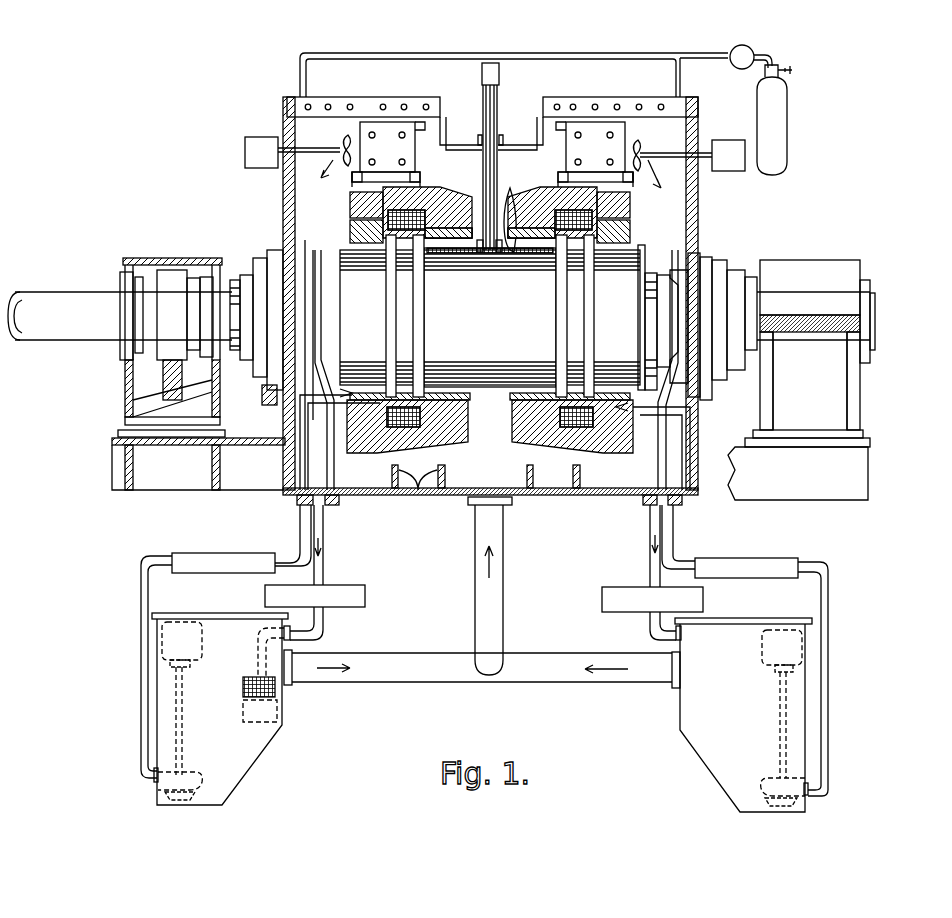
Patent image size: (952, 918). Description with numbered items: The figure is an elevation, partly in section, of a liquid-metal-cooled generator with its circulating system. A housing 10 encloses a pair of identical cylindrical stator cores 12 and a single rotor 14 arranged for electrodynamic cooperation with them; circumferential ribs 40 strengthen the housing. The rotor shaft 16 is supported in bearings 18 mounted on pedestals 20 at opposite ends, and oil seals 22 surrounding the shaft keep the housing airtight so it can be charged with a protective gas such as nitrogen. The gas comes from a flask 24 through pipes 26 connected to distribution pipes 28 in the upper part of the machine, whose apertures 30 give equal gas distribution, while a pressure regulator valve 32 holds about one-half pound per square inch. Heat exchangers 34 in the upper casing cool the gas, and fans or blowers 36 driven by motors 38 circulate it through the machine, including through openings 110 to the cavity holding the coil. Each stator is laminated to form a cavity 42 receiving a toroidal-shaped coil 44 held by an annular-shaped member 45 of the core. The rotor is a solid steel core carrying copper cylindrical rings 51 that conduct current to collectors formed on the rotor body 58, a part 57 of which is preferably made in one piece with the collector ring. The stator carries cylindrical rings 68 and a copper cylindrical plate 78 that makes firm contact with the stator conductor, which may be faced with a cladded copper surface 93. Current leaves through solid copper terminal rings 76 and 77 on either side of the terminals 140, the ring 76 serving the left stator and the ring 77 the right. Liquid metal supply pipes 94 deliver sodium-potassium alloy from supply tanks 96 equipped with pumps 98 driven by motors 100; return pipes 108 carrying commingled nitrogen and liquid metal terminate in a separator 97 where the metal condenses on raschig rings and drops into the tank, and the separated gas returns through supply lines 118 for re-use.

The housing 10 is at (518, 492).
The stator cores 12 is at (507, 457).
The rotor 14 is at (490, 317).
The rotor shaft 16 is at (82, 298).
The bearings 18 is at (160, 257).
The pedestals 20 is at (122, 393).
The oil seals 22 is at (290, 268).
The flask 24 is at (788, 125).
The pipes 26 is at (678, 62).
The distribution pipes 28 is at (395, 105).
The apertures 30 is at (573, 103).
The pressure regulator valve 32 is at (740, 70).
The heat exchangers 34 is at (417, 140).
The fans or blowers 36 is at (345, 144).
The motors 38 is at (243, 158).
The circumferential ribs 40 is at (428, 492).
The cavity 42 is at (420, 230).
The toroidal-shaped coil 44 is at (413, 224).
The annular-shaped member 45 is at (353, 203).
The copper cylindrical rings 51 is at (530, 322).
The collector part 57 is at (607, 452).
The rotor body 58 is at (532, 456).
The cylindrical rings 68 is at (465, 246).
The terminal ring 76 is at (484, 252).
The terminal ring 77 is at (500, 252).
The copper cylindrical plate 78 is at (388, 327).
The cladded copper surface 93 is at (400, 352).
The liquid metal supply pipes 94 is at (299, 530).
The liquid metal supply tanks 96 is at (482, 712).
The separator 97 is at (245, 710).
The pumps 98 is at (176, 785).
The motors 100 is at (165, 638).
The return pipes 108 is at (325, 571).
The openings 110 is at (350, 221).
The supply lines 118 is at (504, 603).
The terminals 140 is at (486, 232).